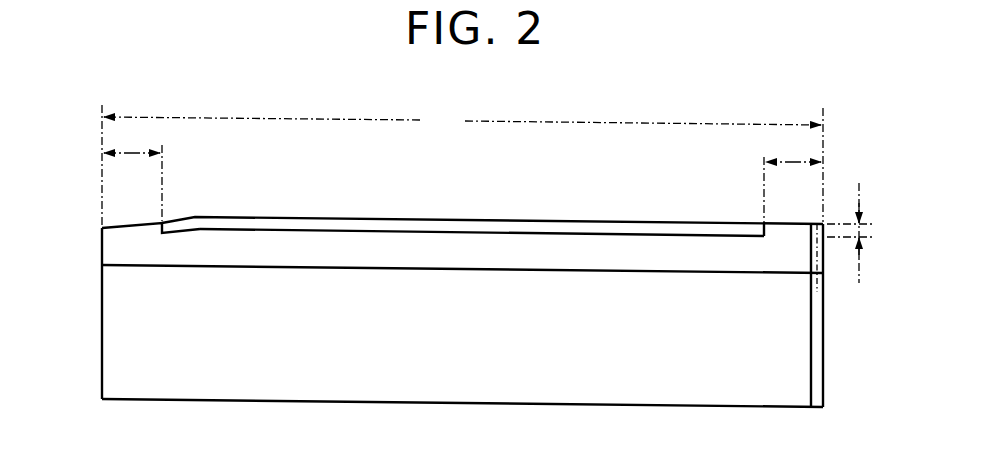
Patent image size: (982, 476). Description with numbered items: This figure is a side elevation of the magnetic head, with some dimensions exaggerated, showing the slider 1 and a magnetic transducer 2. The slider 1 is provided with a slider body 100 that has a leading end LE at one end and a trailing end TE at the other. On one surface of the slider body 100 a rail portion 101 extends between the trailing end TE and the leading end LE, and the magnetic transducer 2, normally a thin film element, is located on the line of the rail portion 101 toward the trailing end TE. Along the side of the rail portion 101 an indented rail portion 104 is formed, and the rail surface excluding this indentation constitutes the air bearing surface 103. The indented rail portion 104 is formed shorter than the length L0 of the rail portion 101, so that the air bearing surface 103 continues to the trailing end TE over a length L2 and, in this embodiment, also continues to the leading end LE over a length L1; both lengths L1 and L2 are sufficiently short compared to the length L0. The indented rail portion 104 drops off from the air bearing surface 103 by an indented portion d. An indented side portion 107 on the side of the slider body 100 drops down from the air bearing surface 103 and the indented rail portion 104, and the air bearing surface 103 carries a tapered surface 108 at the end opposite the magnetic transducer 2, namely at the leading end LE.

The slider 1 is at (464, 312).
The magnetic transducer 2 is at (818, 292).
The slider body 100 is at (465, 307).
The rail portion 101 is at (404, 217).
The air bearing surface 103 is at (455, 220).
The indented rail portion 104 is at (582, 235).
The indented side portion 107 is at (298, 266).
The tapered surface 108 is at (133, 224).
The leading end LE is at (102, 325).
The trailing end TE is at (823, 341).
The length of the rail portions L0 is at (462, 165).
The length of the air bearing surface at the leading end L1 is at (133, 173).
The length of the air bearing surface at the trailing end L2 is at (792, 177).
The indented portion d is at (856, 226).